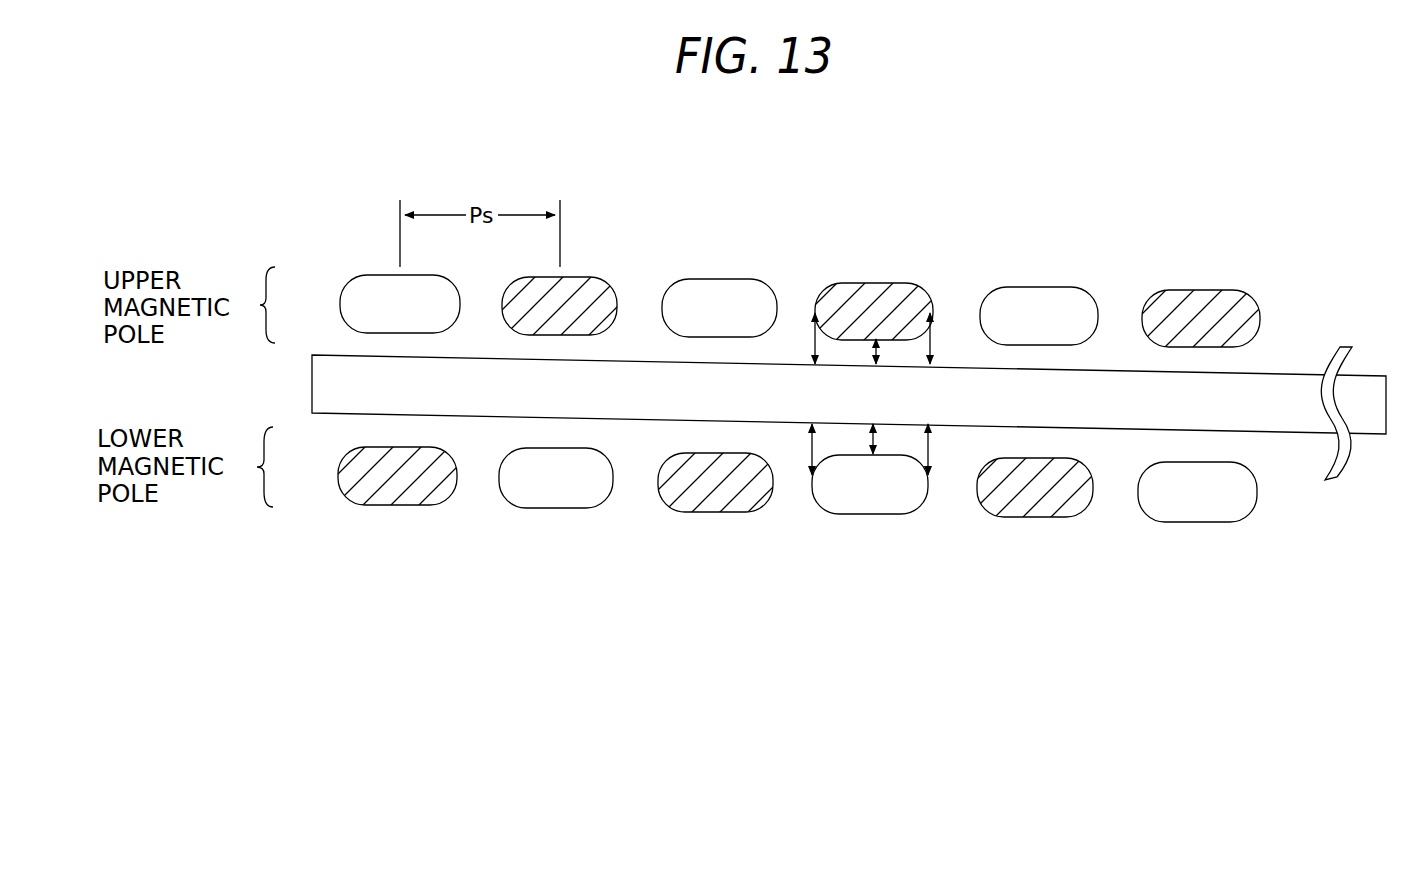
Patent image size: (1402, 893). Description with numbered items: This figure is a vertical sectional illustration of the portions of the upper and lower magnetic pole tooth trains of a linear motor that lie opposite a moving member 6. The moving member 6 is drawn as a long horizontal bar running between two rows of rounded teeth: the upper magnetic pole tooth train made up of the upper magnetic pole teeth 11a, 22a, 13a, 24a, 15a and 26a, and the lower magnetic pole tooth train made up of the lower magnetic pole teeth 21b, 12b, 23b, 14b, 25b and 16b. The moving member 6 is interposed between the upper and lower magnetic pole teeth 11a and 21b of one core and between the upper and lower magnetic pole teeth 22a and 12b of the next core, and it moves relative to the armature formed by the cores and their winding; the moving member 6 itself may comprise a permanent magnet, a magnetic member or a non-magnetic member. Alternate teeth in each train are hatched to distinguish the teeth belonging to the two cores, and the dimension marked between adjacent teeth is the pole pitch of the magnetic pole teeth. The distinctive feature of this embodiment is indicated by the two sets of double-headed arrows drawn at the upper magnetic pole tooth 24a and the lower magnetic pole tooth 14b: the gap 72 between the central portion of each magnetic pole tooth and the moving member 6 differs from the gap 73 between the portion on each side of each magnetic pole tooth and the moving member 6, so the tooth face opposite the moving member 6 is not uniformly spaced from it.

The moving member 6 is at (1283, 376).
The upper magnetic pole tooth 11a is at (372, 275).
The upper magnetic pole tooth 13a is at (708, 279).
The upper magnetic pole tooth 15a is at (1025, 287).
The upper magnetic pole tooth 22a is at (601, 277).
The upper magnetic pole tooth 24a is at (868, 284).
The upper magnetic pole tooth 26a is at (1181, 290).
The lower magnetic pole tooth 12b is at (557, 509).
The lower magnetic pole tooth 14b is at (863, 515).
The lower magnetic pole tooth 16b is at (1169, 523).
The lower magnetic pole tooth 21b is at (403, 506).
The lower magnetic pole tooth 23b is at (707, 513).
The lower magnetic pole tooth 25b is at (1019, 518).
The gap at pole center 72 is at (876, 339).
The gap at pole edge 73 is at (935, 330).